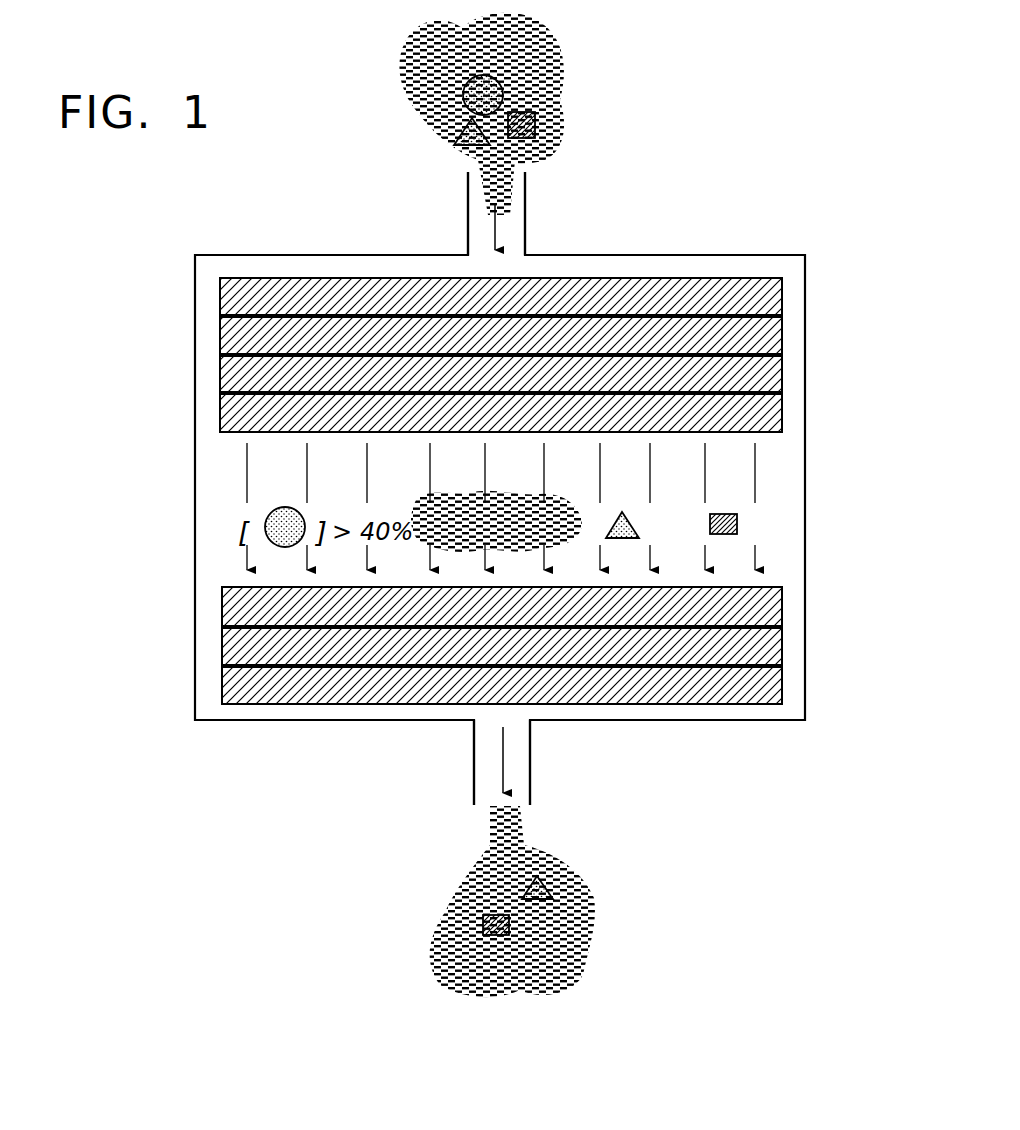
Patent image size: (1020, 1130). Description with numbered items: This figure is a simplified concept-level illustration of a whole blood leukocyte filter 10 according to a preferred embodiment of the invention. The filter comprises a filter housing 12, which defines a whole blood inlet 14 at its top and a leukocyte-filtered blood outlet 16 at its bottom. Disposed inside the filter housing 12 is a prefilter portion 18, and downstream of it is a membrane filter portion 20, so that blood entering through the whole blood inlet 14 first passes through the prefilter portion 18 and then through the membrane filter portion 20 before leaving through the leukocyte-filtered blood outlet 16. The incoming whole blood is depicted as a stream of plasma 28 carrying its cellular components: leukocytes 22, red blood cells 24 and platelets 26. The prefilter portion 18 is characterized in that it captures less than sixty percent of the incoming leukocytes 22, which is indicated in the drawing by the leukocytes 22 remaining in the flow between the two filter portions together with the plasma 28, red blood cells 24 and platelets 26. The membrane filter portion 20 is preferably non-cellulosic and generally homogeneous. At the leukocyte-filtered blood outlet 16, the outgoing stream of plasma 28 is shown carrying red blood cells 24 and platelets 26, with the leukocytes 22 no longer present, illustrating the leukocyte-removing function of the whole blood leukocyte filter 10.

The whole blood leukocyte filter 10 is at (778, 85).
The filter housing 12 is at (806, 457).
The whole blood inlet 14 is at (525, 208).
The leukocyte-filtered blood outlet 16 is at (530, 787).
The prefilter portion 18 is at (780, 323).
The membrane filter portion 20 is at (783, 590).
The leukocytes 22 is at (503, 80).
The red blood cells 24 is at (456, 131).
The platelets 26 is at (537, 115).
The plasma 28 is at (430, 88).